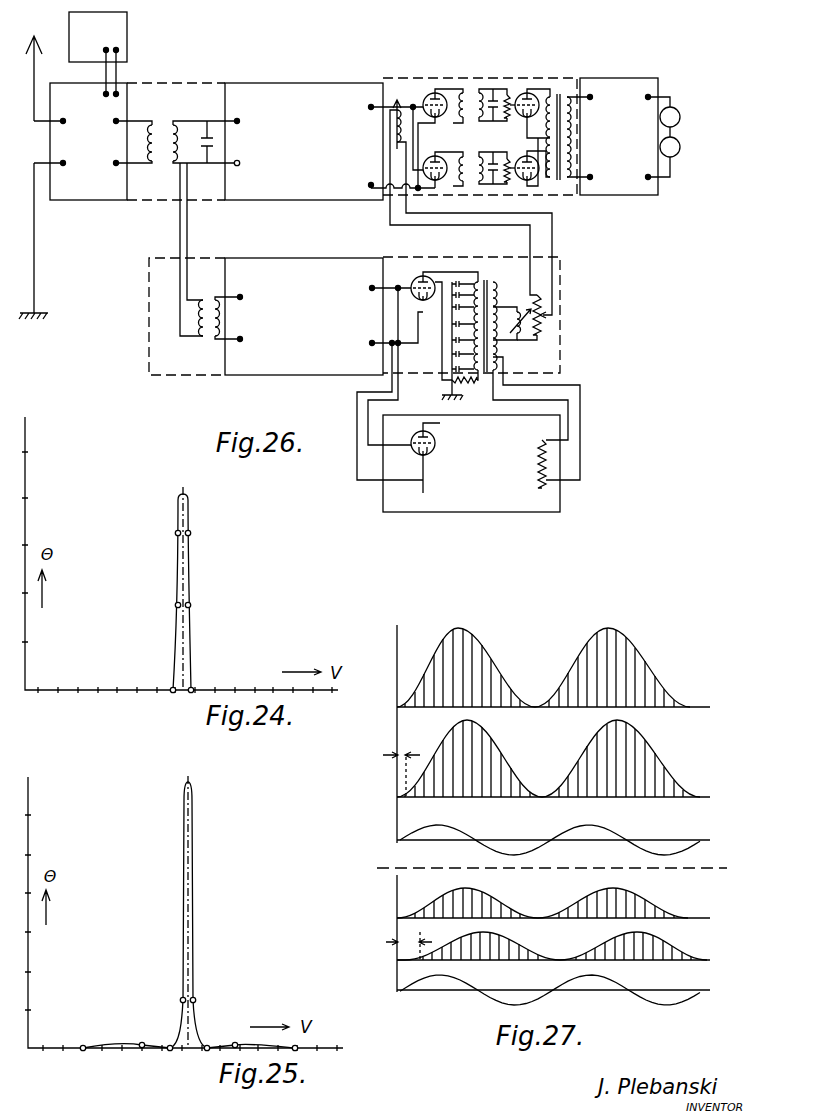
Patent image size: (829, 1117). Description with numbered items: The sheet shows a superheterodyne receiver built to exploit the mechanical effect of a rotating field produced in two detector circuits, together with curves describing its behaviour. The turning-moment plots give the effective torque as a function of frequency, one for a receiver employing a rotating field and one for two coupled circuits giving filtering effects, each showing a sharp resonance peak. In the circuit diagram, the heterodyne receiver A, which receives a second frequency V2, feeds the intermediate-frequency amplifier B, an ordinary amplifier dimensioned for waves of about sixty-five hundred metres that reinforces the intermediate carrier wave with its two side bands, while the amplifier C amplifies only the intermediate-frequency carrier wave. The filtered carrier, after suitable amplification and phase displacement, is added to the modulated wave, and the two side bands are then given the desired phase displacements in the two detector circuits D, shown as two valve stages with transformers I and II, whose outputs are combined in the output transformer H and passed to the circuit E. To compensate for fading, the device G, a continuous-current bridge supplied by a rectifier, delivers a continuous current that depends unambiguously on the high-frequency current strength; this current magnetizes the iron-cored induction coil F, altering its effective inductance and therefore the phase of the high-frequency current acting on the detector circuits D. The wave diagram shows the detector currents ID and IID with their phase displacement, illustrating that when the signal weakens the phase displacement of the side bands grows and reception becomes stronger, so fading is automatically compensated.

In FIG. 26, the second frequency source V2 is at (98, 54).
In FIG. 26, the heterodyne receiver A is at (88, 158).
In FIG. 26, the intermediate-frequency amplifier B is at (304, 156).
In FIG. 26, the amplifier C is at (304, 331).
In FIG. 26, the detector circuits D is at (480, 184).
In FIG. 26, the circuit E is at (630, 122).
In FIG. 26, the iron-cored induction coil F is at (468, 368).
In FIG. 26, the fading compensation device G is at (471, 463).
In FIG. 26, the output transformer H is at (568, 146).
In FIG. 26, the first detector transformer I is at (475, 115).
In FIG. 26, the second detector transformer II is at (475, 178).
In FIG. 27, the detector current curve ID is at (516, 680).
In FIG. 27, the second detector current curve IID is at (517, 768).